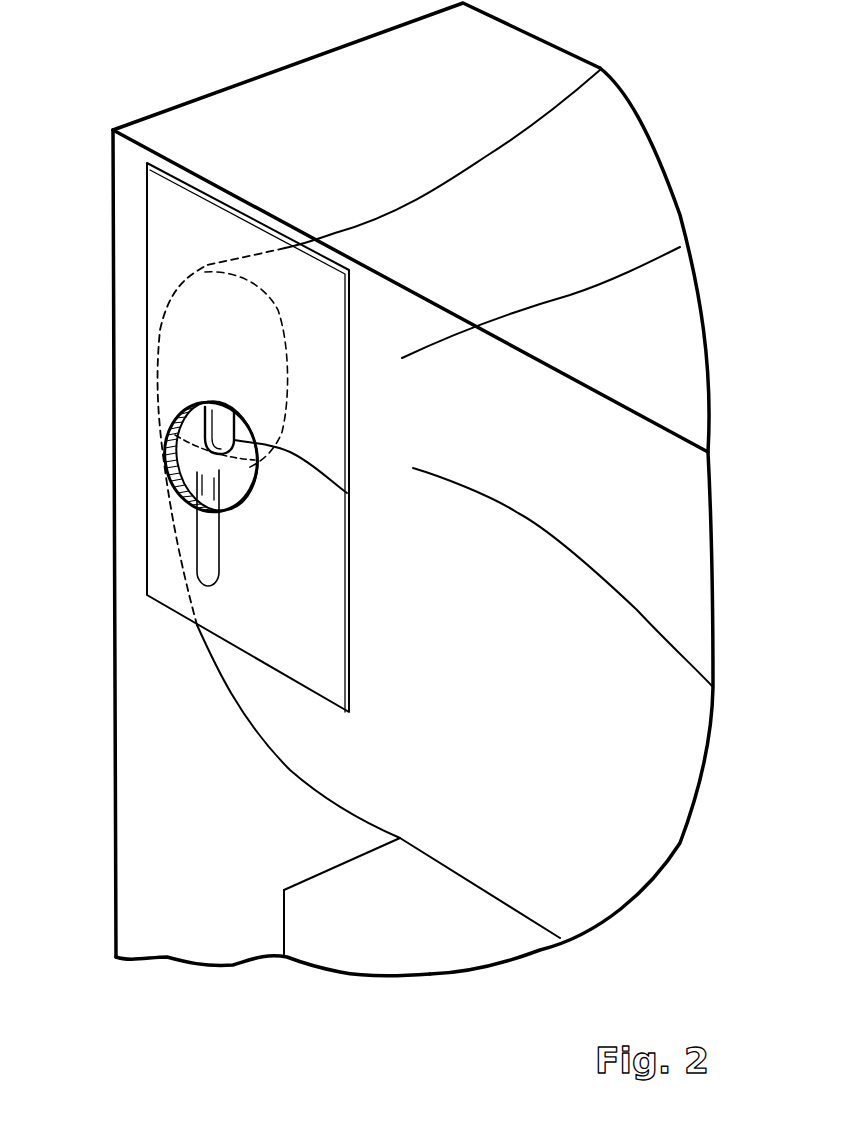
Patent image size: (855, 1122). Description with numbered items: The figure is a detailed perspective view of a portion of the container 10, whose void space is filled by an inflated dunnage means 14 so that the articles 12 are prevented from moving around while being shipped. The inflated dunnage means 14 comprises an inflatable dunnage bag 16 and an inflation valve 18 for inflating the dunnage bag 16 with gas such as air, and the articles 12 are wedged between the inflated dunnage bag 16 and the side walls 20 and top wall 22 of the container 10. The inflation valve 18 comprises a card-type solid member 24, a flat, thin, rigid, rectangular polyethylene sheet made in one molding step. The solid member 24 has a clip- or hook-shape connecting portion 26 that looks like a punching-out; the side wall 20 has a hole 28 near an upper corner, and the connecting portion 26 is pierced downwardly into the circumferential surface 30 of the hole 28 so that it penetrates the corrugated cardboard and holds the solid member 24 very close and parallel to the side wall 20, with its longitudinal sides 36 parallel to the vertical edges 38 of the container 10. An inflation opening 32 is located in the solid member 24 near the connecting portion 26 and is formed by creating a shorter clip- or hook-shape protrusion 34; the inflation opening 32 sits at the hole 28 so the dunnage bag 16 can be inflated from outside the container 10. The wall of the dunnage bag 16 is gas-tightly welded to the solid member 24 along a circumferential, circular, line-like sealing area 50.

The container 10 is at (113, 128).
The articles 12 is at (423, 945).
The inflated dunnage means 14 is at (639, 220).
The inflatable dunnage bag 16 is at (690, 597).
The inflation valve 18 is at (152, 389).
The side wall 20 is at (137, 789).
The top wall 22 is at (228, 116).
The solid member 24 is at (330, 583).
The connecting portion 26 is at (190, 495).
The hole 28 is at (162, 454).
The circumferential surface 30 is at (200, 493).
The inflation opening 32 is at (347, 493).
The protrusion 34 is at (218, 422).
The longitudinal sides 36 is at (350, 412).
The vertical edges 38 is at (115, 190).
The sealing area 50 is at (173, 285).